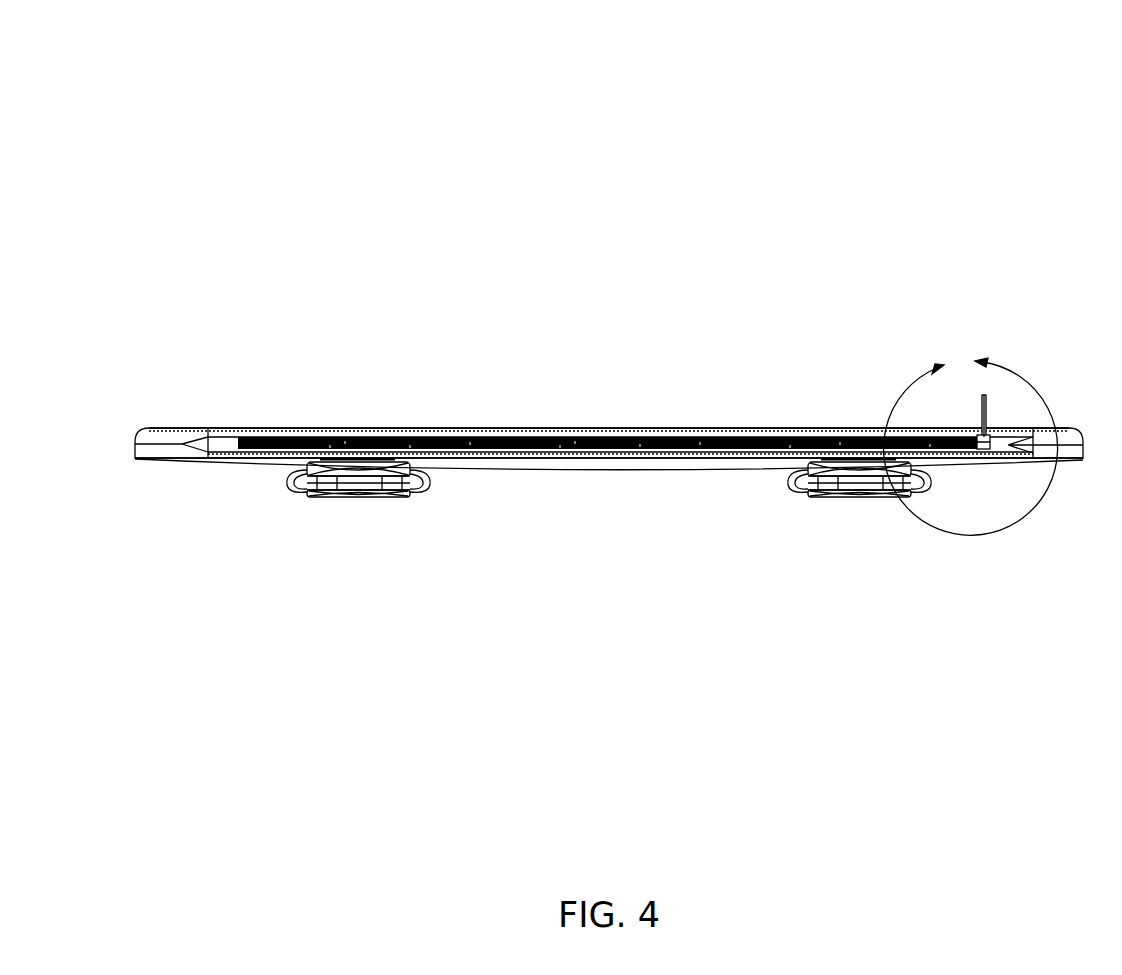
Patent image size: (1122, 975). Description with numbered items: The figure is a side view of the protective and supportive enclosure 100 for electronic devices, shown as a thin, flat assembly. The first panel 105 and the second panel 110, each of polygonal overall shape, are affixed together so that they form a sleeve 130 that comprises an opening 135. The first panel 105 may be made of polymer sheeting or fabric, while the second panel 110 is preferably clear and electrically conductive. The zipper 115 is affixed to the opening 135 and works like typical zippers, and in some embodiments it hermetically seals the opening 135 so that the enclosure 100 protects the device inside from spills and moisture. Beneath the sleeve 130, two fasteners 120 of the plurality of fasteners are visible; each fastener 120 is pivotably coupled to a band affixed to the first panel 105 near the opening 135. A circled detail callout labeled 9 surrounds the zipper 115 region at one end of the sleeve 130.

The enclosure 100 is at (238, 143).
The first panel 105 is at (562, 470).
The second panel 110 is at (568, 428).
The zipper 115 is at (987, 407).
The fastener 120 is at (358, 500).
The sleeve 130 is at (110, 443).
The opening 135 is at (750, 434).
The detail view callout 9 is at (971, 442).